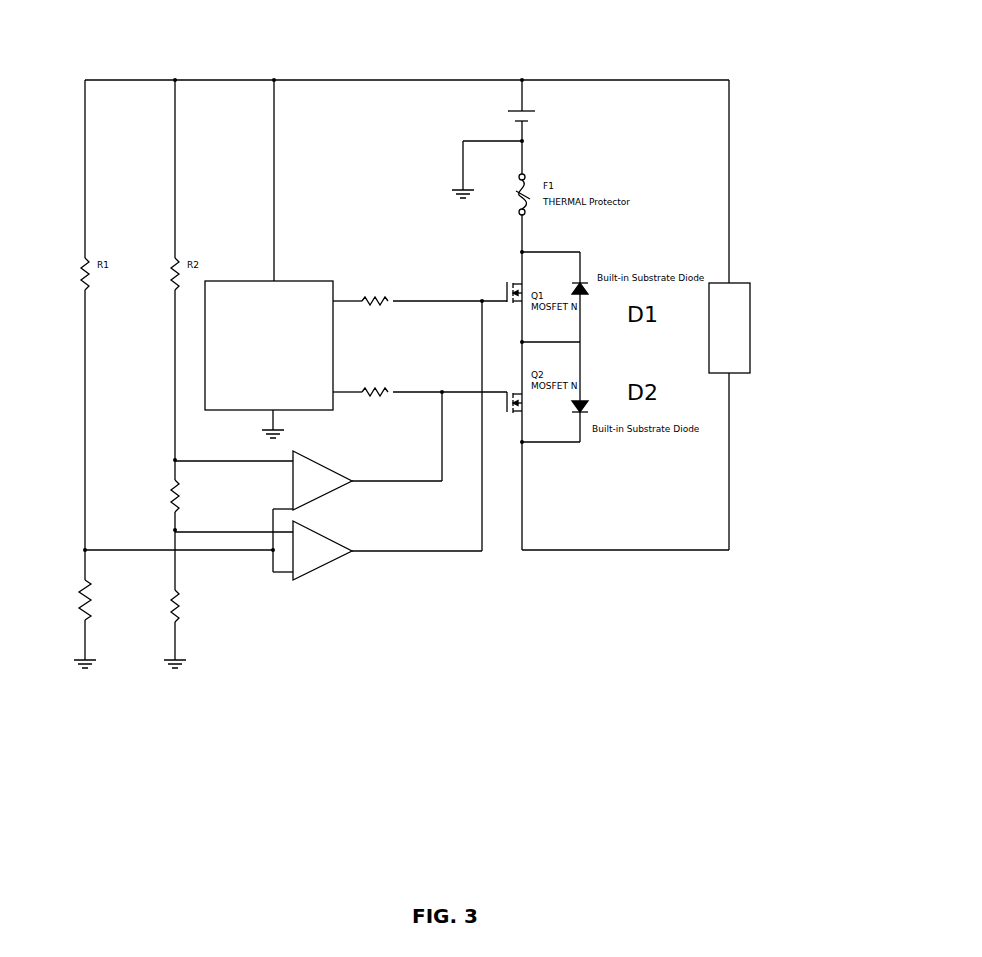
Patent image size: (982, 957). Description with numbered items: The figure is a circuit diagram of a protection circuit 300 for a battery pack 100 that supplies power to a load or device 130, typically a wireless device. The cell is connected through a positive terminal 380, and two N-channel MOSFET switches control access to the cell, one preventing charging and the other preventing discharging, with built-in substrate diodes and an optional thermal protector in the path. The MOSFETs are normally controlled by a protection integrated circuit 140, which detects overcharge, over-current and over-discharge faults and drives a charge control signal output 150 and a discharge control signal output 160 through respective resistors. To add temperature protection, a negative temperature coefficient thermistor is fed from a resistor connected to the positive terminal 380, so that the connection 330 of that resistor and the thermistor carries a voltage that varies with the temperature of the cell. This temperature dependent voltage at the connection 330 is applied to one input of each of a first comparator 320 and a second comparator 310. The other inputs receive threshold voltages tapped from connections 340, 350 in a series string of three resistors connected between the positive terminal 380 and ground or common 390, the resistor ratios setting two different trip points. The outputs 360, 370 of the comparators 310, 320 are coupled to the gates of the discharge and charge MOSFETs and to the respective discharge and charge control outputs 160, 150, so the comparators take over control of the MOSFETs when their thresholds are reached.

The battery pack 100 is at (429, 67).
The load or device 130 is at (763, 300).
The protection integrated circuit 140 is at (227, 313).
The charge control signal output 150 is at (344, 280).
The discharge control signal output 160 is at (343, 400).
The protection circuit 300 is at (311, 100).
The second comparator 310 is at (310, 485).
The first comparator 320 is at (310, 552).
The connection of resistor R1 and thermistor RT1 330 is at (75, 527).
The connection between resistors R2 and R3 340 is at (160, 450).
The connection between resistors R3 and R4 350 is at (160, 517).
The comparator output 360 is at (443, 382).
The comparator output 370 is at (482, 298).
The positive terminal of the cell 380 is at (528, 67).
The ground or common 390 is at (187, 670).